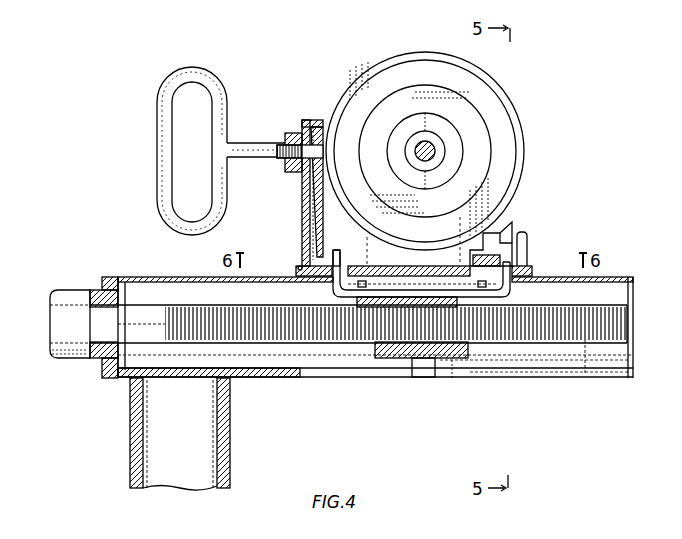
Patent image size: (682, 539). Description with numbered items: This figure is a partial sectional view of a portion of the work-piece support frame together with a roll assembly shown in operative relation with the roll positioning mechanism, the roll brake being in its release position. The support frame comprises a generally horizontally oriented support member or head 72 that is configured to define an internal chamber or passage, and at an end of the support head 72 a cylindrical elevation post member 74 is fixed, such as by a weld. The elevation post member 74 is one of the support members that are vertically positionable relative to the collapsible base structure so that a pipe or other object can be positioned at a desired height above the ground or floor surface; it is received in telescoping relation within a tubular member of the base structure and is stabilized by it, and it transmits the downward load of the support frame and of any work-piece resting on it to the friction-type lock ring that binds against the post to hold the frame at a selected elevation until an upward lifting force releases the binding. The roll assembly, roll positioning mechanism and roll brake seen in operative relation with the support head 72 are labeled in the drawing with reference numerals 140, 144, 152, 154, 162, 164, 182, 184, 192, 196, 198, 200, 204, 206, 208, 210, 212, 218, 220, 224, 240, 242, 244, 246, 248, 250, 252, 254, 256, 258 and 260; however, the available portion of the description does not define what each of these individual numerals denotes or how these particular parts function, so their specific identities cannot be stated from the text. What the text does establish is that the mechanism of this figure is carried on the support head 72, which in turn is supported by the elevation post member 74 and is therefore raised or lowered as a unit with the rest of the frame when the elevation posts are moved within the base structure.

The support head 72 is at (280, 380).
The cylindrical elevation post member 74 is at (130, 436).
The collar 140 is at (104, 277).
The nut 144 is at (101, 372).
The housing 152 is at (497, 370).
The housing end portion 154 is at (586, 345).
The bearing 162 is at (128, 276).
The hand wheel 164 is at (362, 52).
The housing end cap 182 is at (625, 270).
The nut block 184 is at (401, 360).
The threaded rod 192 is at (315, 343).
The plate 196 is at (298, 268).
The plate 198 is at (525, 270).
The block 200 is at (400, 292).
The key 204 is at (452, 378).
The top plate 206 is at (320, 284).
The clip 208 is at (512, 290).
The post 210 is at (336, 250).
The post 212 is at (528, 246).
The spindle 218 is at (462, 232).
The mounting block 220 is at (510, 240).
The wedge 224 is at (492, 232).
The hub 240 is at (438, 152).
The wheel disk 242 is at (485, 90).
The plate 244 is at (302, 182).
The slot 246 is at (312, 240).
The wedge 248 is at (313, 210).
The bolt 250 is at (277, 143).
The nut 252 is at (292, 133).
The handle 254 is at (157, 145).
The bolt end 256 is at (323, 150).
The bracket 258 is at (330, 115).
The rim 260 is at (510, 100).